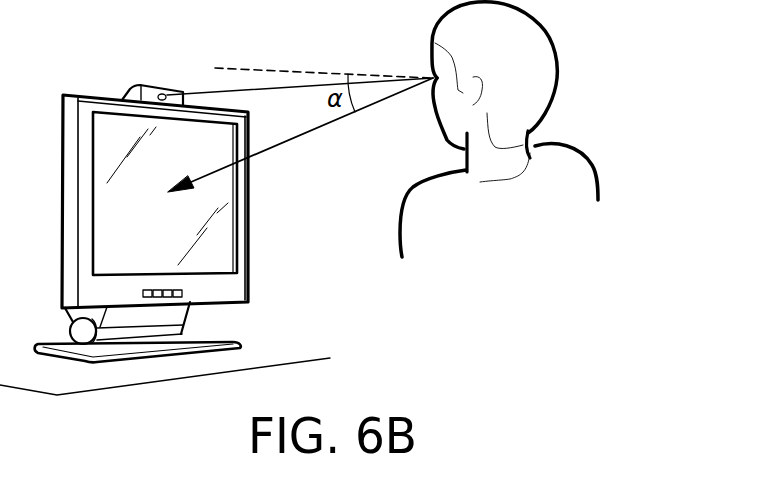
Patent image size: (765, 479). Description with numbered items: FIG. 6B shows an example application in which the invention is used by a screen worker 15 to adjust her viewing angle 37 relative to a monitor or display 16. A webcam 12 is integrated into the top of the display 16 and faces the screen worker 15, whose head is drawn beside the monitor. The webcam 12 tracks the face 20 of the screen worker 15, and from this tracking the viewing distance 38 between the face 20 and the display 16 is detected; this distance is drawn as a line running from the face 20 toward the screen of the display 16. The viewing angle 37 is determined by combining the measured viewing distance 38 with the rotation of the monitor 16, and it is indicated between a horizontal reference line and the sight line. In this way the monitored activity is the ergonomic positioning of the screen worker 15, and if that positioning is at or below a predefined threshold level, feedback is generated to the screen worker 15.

The webcam 12 is at (162, 91).
The screen worker 15 is at (600, 132).
The display 16 is at (220, 240).
The face 20 is at (540, 57).
The viewing angle 37 is at (337, 75).
The viewing distance 38 is at (300, 137).